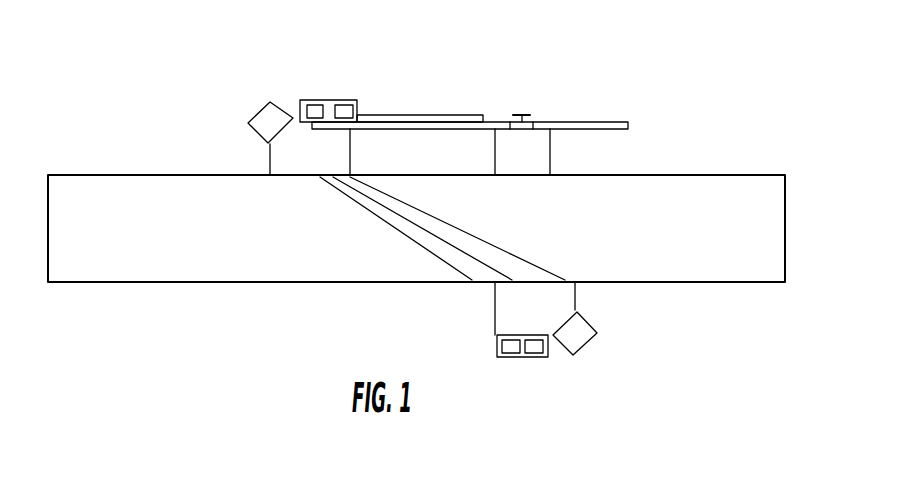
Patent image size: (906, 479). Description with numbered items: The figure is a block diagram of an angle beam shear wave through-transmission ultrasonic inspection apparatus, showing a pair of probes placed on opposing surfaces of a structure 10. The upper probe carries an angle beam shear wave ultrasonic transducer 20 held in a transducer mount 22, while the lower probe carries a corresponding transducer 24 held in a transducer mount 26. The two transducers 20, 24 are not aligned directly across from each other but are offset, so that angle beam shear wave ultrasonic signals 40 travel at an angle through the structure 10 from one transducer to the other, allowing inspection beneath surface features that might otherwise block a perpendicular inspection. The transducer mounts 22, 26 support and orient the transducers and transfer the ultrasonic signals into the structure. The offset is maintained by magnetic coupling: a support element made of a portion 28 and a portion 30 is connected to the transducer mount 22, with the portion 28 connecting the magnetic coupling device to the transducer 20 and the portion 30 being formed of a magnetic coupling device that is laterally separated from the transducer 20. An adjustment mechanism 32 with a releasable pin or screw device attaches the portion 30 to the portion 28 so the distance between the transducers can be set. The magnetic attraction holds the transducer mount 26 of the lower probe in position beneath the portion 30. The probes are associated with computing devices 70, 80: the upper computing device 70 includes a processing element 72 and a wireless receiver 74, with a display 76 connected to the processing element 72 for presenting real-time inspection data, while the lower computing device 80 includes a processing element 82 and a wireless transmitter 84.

The structure 10 is at (690, 185).
The angle beam shear wave ultrasonic transducer 20 is at (265, 112).
The transducer mount 22 is at (283, 157).
The angle beam shear wave ultrasonic transducer 24 is at (580, 332).
The transducer mount 26 is at (563, 298).
The support element portion 28 is at (615, 120).
The support element portion 30 is at (542, 142).
The adjustment mechanism 32 is at (537, 105).
The angle beam shear wave ultrasonic signals 40 is at (378, 252).
The computing device 70 is at (350, 100).
The processing element 72 is at (312, 108).
The wireless receiver 74 is at (343, 110).
The display 76 is at (435, 115).
The computing device 80 is at (497, 352).
The processing element 82 is at (547, 357).
The wireless transmitter 84 is at (508, 345).